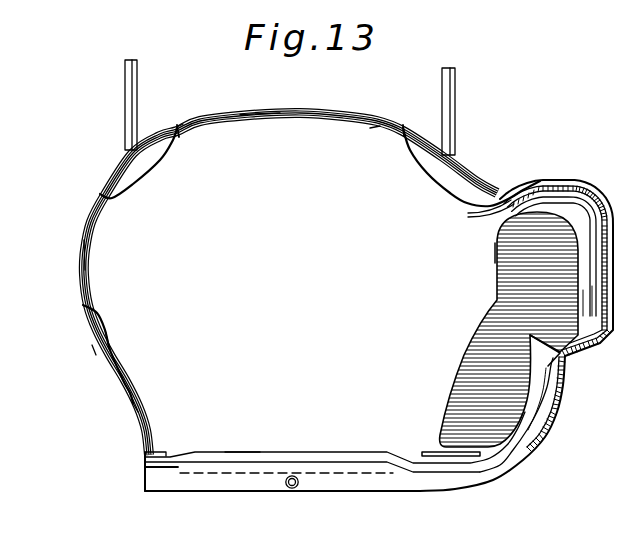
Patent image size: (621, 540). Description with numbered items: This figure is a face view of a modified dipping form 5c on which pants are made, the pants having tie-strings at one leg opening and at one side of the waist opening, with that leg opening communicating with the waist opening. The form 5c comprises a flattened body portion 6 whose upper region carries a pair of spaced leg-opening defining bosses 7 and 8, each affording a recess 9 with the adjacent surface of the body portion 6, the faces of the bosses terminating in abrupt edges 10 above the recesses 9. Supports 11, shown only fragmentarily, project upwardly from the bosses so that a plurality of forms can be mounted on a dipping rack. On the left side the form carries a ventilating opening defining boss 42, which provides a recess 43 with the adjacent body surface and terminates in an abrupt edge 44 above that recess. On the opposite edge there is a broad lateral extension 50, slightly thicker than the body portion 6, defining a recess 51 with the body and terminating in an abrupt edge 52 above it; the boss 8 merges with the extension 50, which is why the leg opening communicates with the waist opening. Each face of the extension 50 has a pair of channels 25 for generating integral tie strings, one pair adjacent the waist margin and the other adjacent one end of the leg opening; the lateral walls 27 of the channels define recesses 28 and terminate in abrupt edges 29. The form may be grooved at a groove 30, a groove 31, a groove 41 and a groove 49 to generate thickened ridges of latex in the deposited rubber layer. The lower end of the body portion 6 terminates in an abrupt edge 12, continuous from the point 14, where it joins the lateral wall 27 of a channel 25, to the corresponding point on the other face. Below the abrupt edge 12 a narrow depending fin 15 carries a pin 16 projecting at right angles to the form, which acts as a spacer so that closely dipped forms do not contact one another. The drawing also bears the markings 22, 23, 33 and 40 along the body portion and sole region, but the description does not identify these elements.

The shoe upper 5c is at (290, 267).
The upper vamp portion 22 is at (258, 115).
The upper side portion 23 is at (80, 251).
The last pins 11 is at (137, 90).
The front flap 7 is at (167, 140).
The rear flap 8 is at (462, 171).
The flap edge 10 is at (178, 125).
The seam 9 is at (181, 126).
The upper edge 6 is at (366, 137).
The heel counter 50 is at (576, 186).
The lining strip 49 is at (495, 250).
The filler 52 is at (490, 333).
The filler edge 51 is at (481, 357).
The tongue flap 27 is at (563, 383).
The heel 14 is at (528, 449).
The lining layer 25 is at (551, 411).
The stitched band 29 is at (557, 421).
The inner lining 28 is at (542, 438).
The insole 30 is at (145, 465).
The midsole 12 is at (275, 472).
The stitching 33 is at (232, 462).
The outsole 15 is at (194, 478).
The rivet 16 is at (288, 488).
The bar 31 is at (431, 450).
The bracket 41 is at (145, 453).
The side flap 43 is at (83, 305).
The flap fold 44 is at (112, 352).
The flap edge 42 is at (96, 352).
The flap corner 40 is at (137, 421).